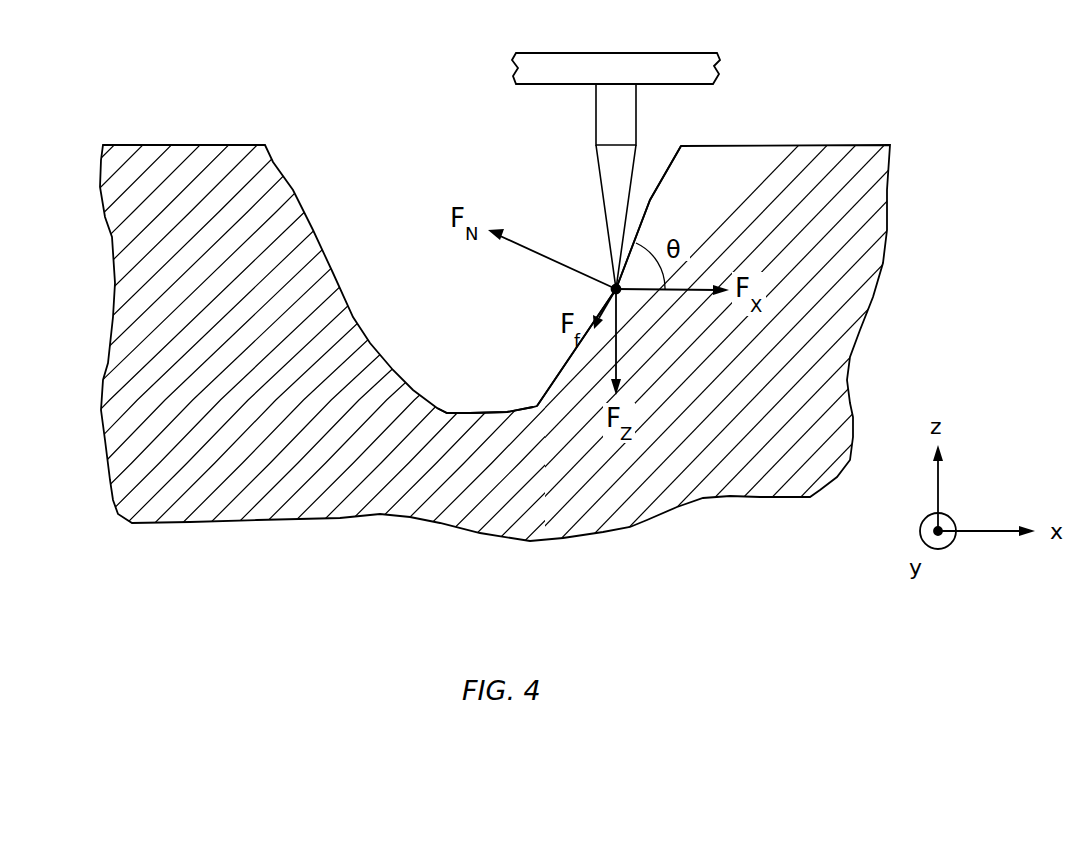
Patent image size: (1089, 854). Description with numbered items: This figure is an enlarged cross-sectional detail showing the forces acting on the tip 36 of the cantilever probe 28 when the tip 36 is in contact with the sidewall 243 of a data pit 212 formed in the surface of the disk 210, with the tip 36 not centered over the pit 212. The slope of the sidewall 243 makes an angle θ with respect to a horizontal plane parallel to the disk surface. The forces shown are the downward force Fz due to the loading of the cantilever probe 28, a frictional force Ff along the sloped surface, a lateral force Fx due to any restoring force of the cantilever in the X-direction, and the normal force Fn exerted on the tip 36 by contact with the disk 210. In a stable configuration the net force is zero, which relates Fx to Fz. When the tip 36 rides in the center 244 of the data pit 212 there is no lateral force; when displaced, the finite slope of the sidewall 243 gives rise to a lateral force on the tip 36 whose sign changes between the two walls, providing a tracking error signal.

The cantilever probe 28 is at (703, 70).
The tip 36 is at (603, 178).
The disk 210 is at (785, 257).
The data pit 212 is at (399, 138).
The sidewall 243 is at (640, 178).
The center 244 is at (466, 411).